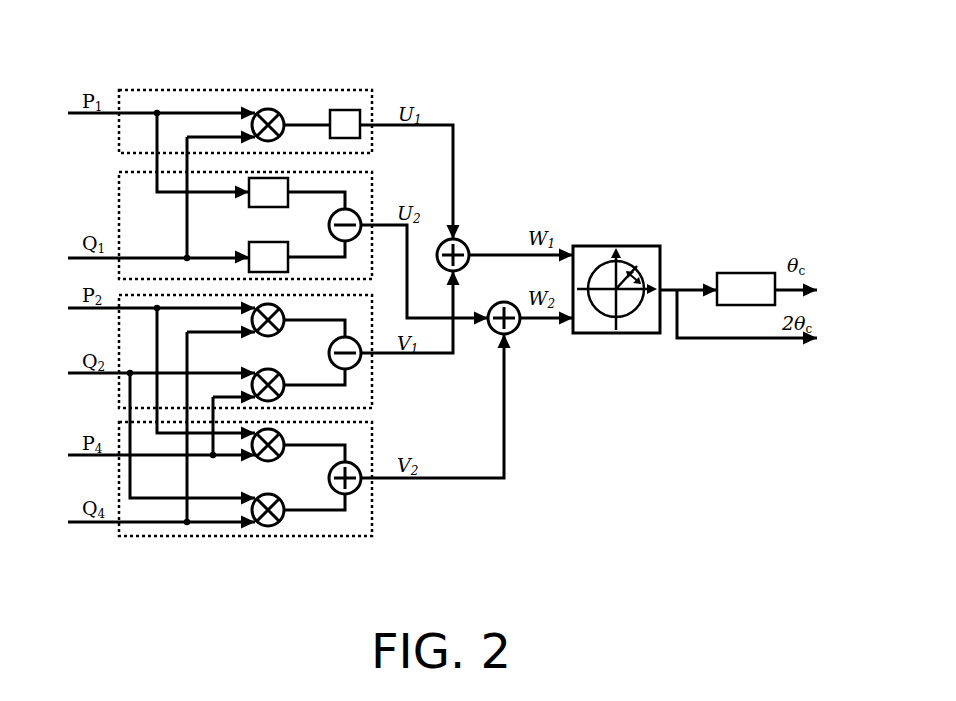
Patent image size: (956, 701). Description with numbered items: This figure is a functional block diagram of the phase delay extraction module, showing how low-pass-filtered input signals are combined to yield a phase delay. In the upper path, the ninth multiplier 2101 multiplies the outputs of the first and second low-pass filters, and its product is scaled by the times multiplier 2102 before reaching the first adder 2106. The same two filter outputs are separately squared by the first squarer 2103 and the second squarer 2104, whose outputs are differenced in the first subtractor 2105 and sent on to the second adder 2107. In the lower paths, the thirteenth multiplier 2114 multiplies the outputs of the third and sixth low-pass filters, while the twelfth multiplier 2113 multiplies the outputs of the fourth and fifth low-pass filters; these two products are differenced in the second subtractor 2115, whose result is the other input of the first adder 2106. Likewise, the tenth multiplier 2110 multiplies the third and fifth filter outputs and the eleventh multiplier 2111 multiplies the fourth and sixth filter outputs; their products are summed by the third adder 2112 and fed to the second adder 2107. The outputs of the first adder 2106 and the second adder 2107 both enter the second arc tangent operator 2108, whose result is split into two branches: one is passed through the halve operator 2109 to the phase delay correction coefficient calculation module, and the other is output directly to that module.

The ninth multiplier 2101 is at (279, 114).
The times multiplier 2102 is at (327, 108).
The first squarer 2103 is at (275, 178).
The second squarer 2104 is at (283, 242).
The first subtractor 2105 is at (357, 212).
The first adder 2106 is at (459, 241).
The second adder 2107 is at (514, 305).
The second arc tangent operator 2108 is at (623, 246).
The halve operator 2109 is at (750, 273).
The tenth multiplier 2110 is at (257, 456).
The eleventh multiplier 2111 is at (257, 521).
The third adder 2112 is at (334, 489).
The twelfth multiplier 2113 is at (279, 396).
The thirteenth multiplier 2114 is at (279, 331).
The second subtractor 2115 is at (356, 364).